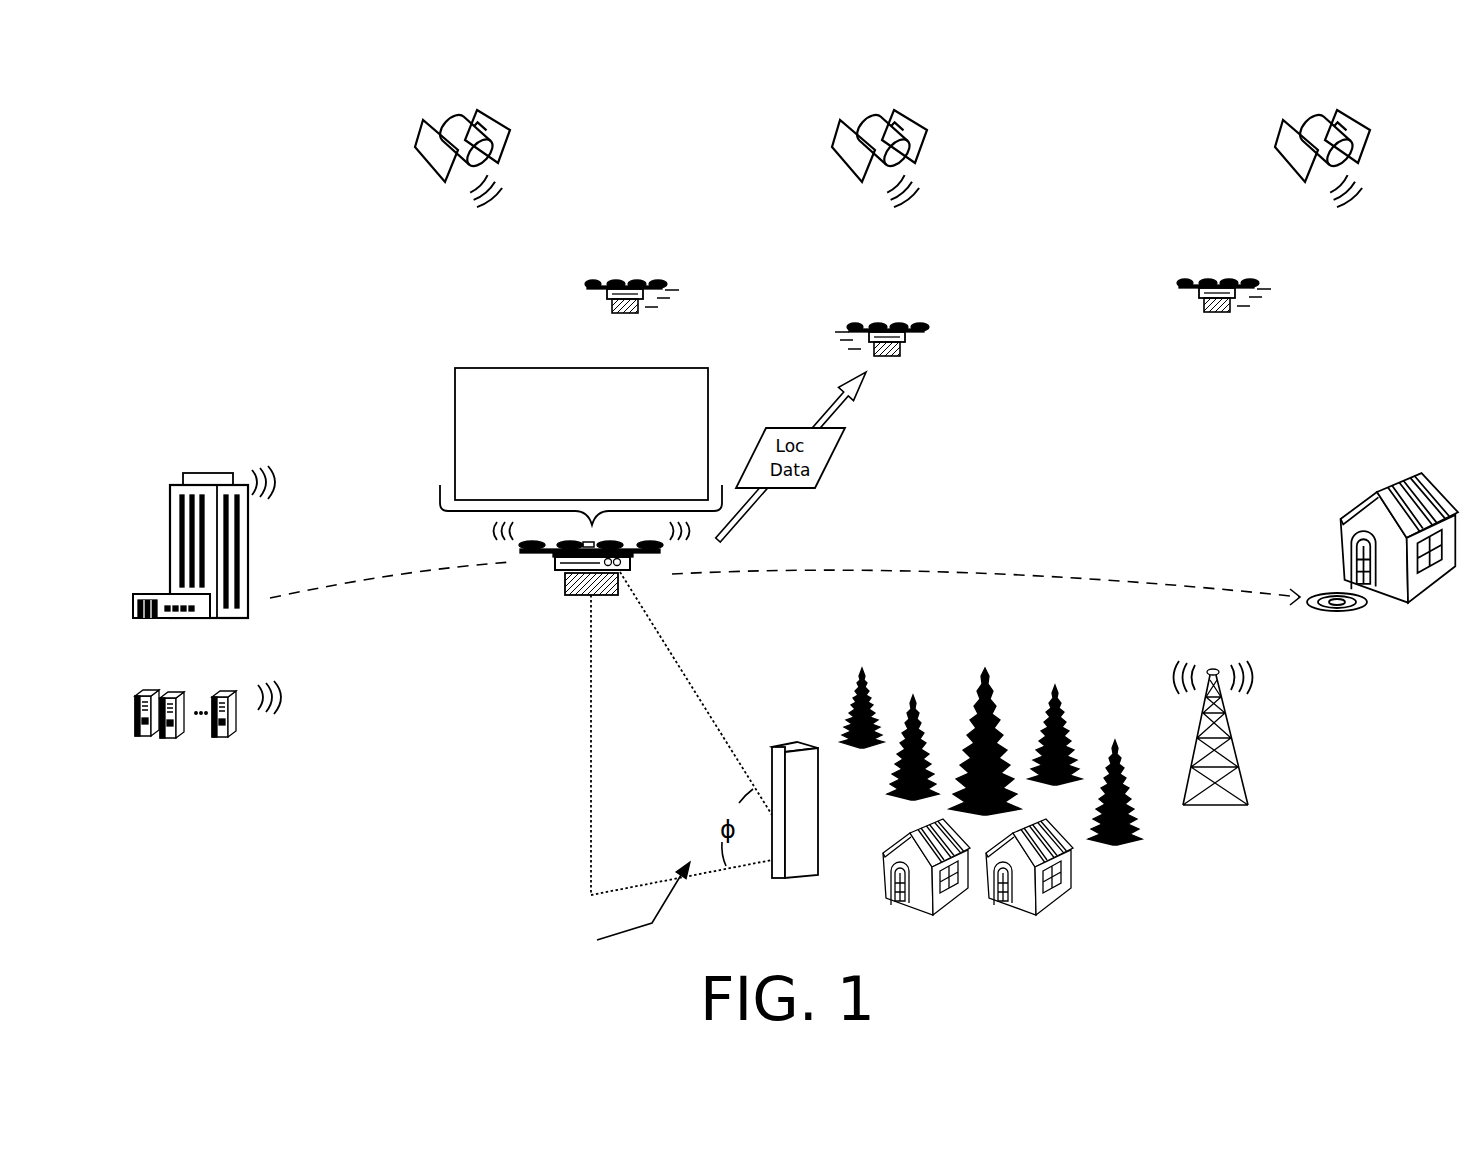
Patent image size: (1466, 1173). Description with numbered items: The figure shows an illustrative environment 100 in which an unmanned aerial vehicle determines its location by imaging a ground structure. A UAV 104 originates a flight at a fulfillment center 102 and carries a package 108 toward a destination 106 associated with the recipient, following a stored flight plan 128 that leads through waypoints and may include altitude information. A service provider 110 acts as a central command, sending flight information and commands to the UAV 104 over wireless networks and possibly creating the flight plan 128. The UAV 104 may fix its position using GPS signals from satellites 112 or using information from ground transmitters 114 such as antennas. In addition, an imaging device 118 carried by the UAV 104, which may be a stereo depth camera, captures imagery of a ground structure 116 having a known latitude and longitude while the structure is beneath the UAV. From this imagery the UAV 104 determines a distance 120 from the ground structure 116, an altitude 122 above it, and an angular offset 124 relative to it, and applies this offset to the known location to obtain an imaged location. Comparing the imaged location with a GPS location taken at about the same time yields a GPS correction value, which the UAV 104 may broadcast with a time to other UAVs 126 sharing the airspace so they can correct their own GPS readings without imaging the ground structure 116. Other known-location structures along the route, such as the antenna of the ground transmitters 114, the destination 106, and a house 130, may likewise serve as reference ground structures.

The environment 100 is at (183, 150).
The fulfillment center 102 is at (204, 510).
The UAV 104 is at (558, 496).
The destination 106 is at (1352, 613).
The package 108 is at (592, 597).
The service provider 110 is at (204, 741).
The satellites 112 is at (414, 144).
The ground transmitters 114 is at (1232, 750).
The ground structure 116 is at (790, 878).
The imaging device 118 is at (625, 568).
The distance 120 is at (697, 668).
The altitude 122 is at (590, 772).
The angular offset 124 is at (616, 907).
The other UAVs 126 is at (592, 283).
The flight plan 128 is at (1000, 575).
The house 130 is at (1043, 914).